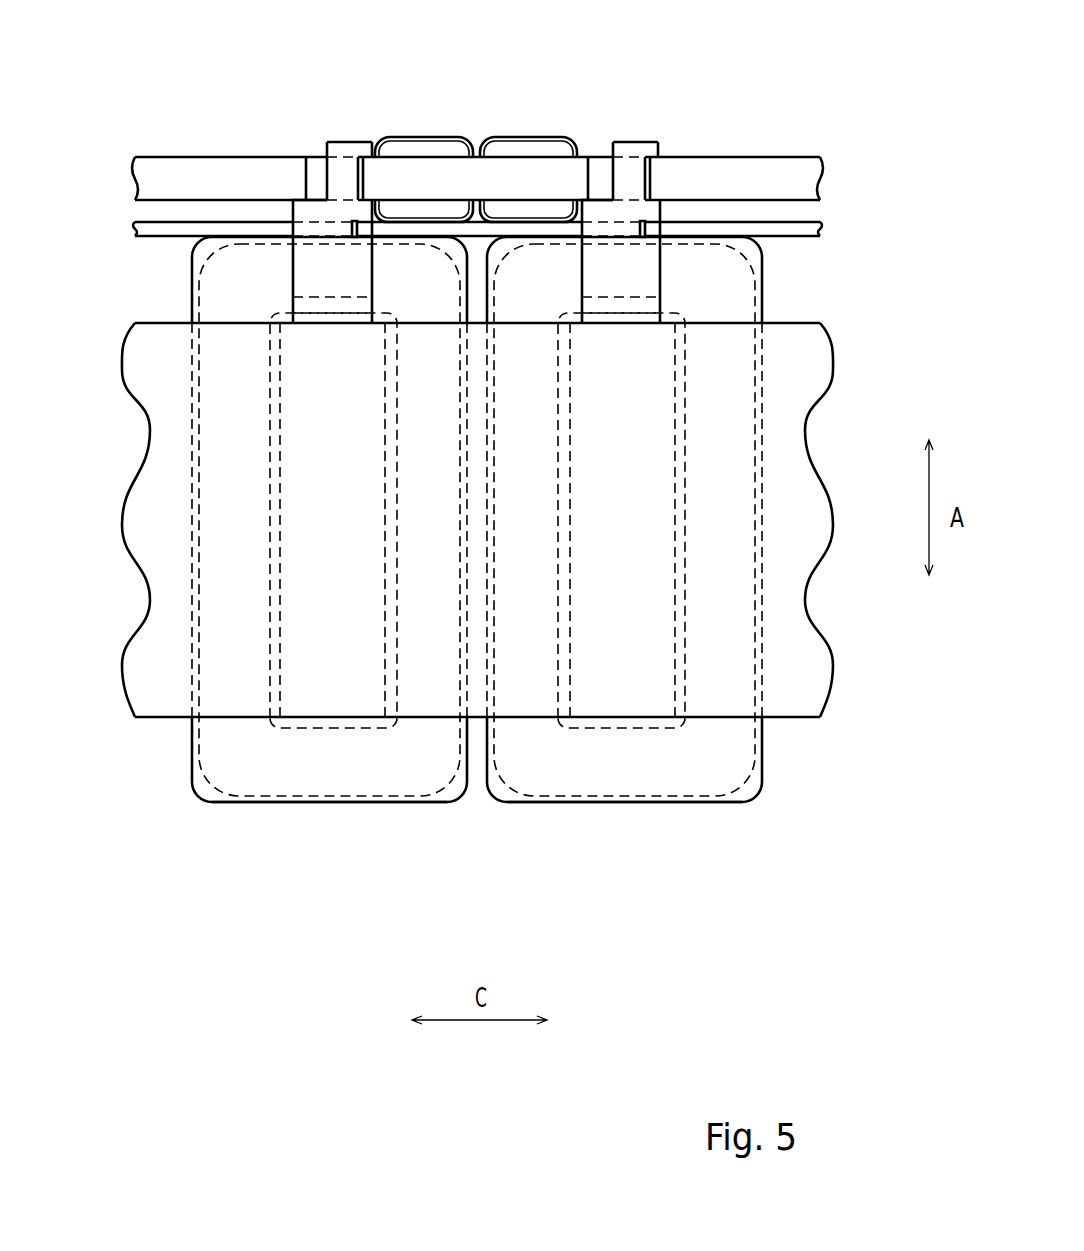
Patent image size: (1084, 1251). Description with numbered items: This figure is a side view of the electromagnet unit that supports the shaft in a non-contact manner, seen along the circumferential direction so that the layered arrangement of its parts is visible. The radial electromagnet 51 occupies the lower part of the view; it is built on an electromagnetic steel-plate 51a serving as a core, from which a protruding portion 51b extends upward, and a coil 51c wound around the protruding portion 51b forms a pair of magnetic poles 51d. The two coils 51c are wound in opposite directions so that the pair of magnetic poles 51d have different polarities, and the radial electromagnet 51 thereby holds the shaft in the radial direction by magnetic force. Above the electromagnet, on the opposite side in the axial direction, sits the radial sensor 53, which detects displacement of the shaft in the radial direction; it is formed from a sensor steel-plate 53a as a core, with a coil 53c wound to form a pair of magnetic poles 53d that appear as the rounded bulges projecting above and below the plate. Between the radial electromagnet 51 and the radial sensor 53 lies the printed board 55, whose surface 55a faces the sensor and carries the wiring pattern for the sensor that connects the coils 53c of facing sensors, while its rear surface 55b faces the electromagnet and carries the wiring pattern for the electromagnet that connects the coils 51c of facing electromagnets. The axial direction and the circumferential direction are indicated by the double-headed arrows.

The radial electromagnet 51 is at (470, 830).
The electromagnetic steel-plate 51a is at (815, 690).
The protruding portion 51b is at (284, 663).
The coil 51c is at (433, 783).
The magnetic pole 51d is at (332, 820).
The radial sensor 53 is at (474, 113).
The sensor steel-plate 53a is at (795, 165).
The coil 53c is at (397, 148).
The magnetic pole 53d is at (425, 112).
The printed board 55 is at (797, 232).
The surface 55a is at (133, 216).
The rear surface 55b is at (136, 242).